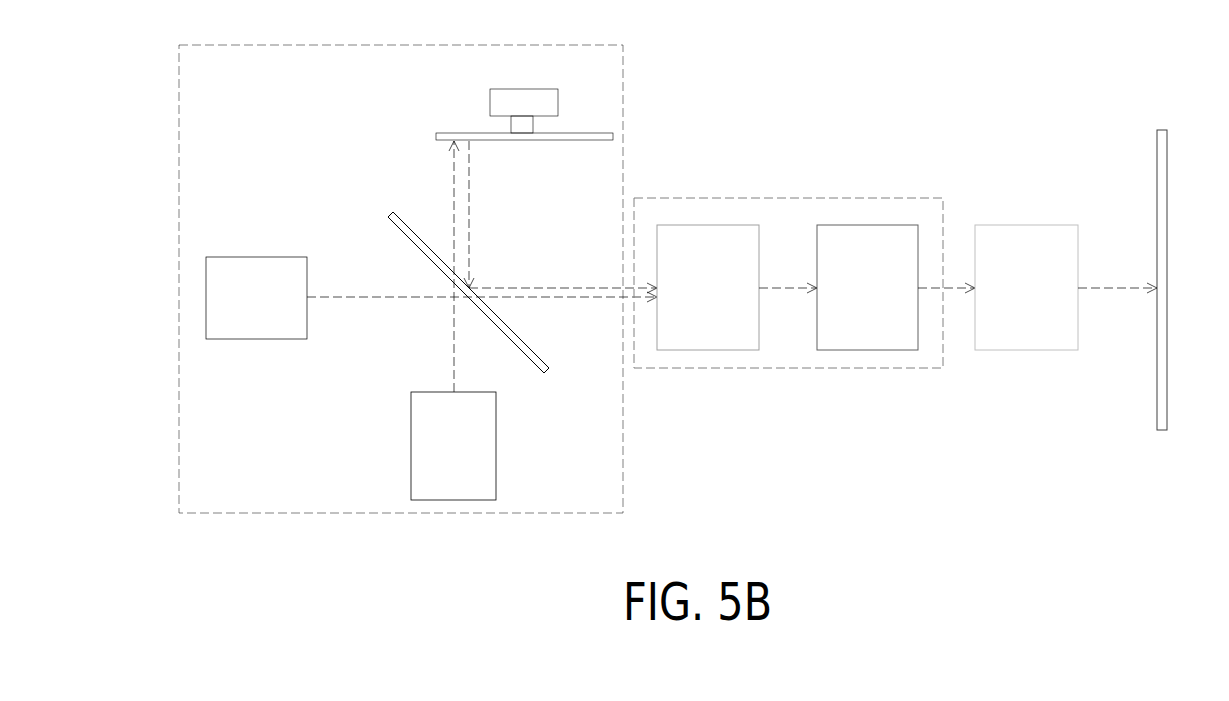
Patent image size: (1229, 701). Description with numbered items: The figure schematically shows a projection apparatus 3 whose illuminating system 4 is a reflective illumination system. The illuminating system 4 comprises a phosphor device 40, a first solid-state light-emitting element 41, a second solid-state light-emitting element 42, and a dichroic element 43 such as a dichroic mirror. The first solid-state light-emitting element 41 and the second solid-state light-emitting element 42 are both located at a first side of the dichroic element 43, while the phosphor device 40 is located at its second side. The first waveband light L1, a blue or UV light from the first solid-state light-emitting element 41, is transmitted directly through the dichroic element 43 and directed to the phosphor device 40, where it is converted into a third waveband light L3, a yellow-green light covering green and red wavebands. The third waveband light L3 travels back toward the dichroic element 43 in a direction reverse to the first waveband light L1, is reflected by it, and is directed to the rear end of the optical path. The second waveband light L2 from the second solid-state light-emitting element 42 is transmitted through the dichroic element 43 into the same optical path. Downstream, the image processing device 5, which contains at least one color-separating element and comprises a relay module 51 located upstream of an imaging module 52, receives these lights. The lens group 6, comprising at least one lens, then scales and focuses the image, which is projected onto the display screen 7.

The projection apparatus 3 is at (786, 73).
The illuminating system 4 is at (267, 45).
The phosphor device 40 is at (452, 133).
The first solid-state light-emitting element 41 is at (411, 450).
The second solid-state light-emitting element 42 is at (248, 257).
The dichroic element 43 is at (549, 370).
The first waveband light L1 is at (452, 362).
The second waveband light L2 is at (361, 297).
The third waveband light L3 is at (470, 188).
The image processing device 5 is at (787, 198).
The relay module 51 is at (709, 350).
The imaging module 52 is at (868, 350).
The lens group 6 is at (1027, 350).
The display screen 7 is at (1158, 133).